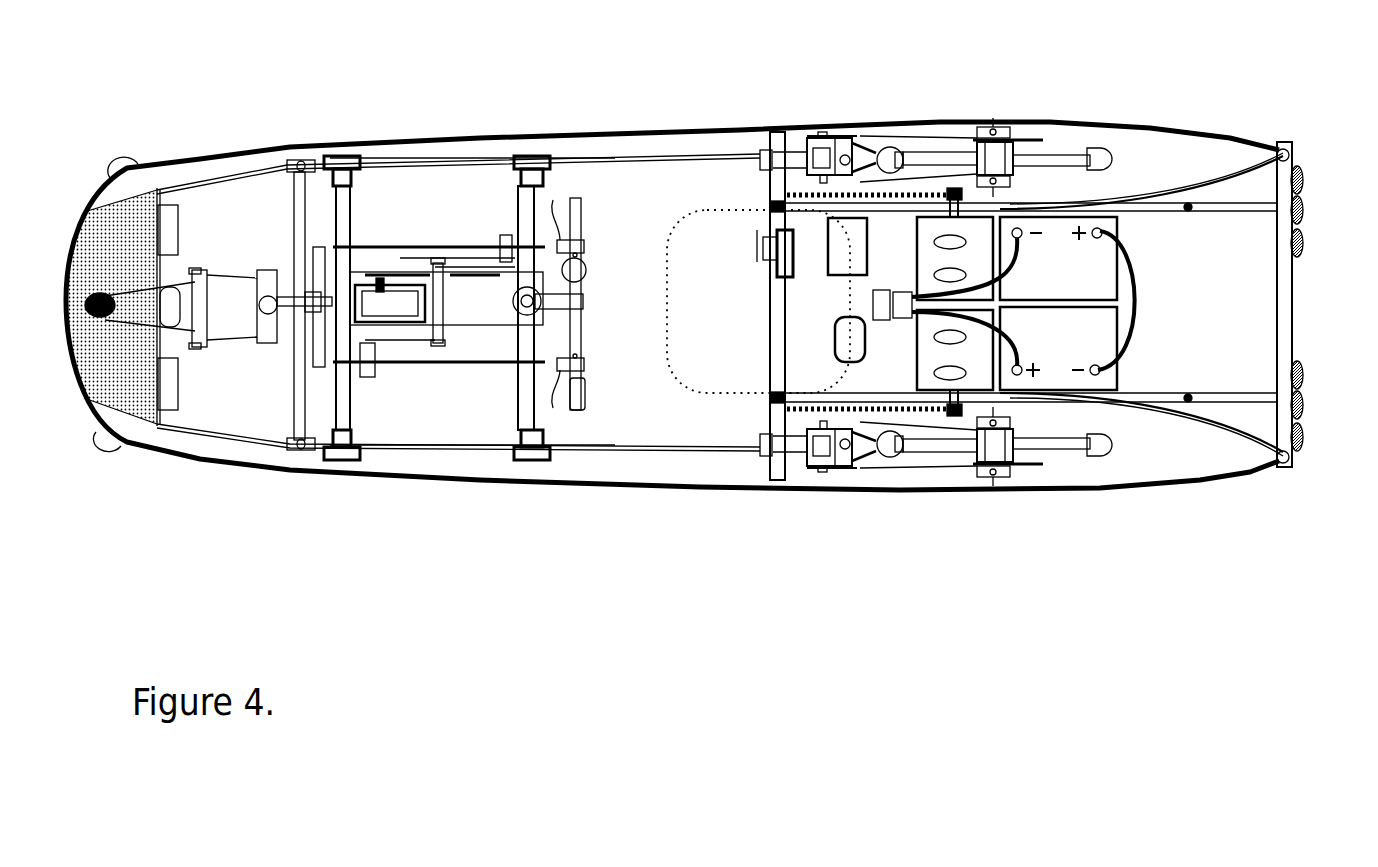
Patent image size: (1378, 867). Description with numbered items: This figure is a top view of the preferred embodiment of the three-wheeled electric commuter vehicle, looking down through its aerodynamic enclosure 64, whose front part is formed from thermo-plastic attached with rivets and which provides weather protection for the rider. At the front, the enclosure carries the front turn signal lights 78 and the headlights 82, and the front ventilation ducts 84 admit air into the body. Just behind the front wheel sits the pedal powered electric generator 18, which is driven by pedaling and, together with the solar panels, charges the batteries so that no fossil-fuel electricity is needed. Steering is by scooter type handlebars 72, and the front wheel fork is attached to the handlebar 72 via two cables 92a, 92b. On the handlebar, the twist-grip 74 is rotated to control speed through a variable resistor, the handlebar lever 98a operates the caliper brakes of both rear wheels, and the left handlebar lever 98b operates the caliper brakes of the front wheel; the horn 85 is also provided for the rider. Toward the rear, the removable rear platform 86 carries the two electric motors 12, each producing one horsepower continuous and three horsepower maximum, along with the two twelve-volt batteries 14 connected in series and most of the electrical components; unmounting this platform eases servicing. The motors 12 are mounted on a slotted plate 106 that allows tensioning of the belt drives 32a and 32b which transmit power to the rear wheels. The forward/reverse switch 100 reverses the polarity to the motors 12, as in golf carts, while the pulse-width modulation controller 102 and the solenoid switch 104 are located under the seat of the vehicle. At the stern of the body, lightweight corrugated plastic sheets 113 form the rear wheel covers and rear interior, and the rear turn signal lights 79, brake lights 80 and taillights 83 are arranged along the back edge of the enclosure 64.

The electric motor 12 is at (970, 263).
The battery 14 is at (1105, 340).
The pedal powered electric generator 18 is at (393, 300).
The belt drive 32a is at (868, 150).
The belt drive 32b is at (903, 413).
The aerodynamic enclosure 64 is at (229, 153).
The handlebar 72 is at (576, 325).
The twist-grip 74 is at (578, 395).
The front turn signal light 78 is at (118, 165).
The rear turn signal light 79 is at (1297, 163).
The brake light 80 is at (1305, 377).
The headlight 82 is at (167, 312).
The taillight 83 is at (1302, 208).
The front ventilation duct 84 is at (165, 222).
The horn 85 is at (582, 260).
The rear platform 86 is at (897, 255).
The cable 92a is at (388, 247).
The cable 92b is at (433, 363).
The handlebar lever 98a is at (565, 200).
The left handlebar lever 98b is at (562, 372).
The forward/reverse switch 100 is at (775, 203).
The pulse-width modulation controller 102 is at (833, 243).
The solenoid switch 104 is at (857, 340).
The slotted plate 106 is at (952, 357).
The corrugated plastic sheet 113 is at (1047, 127).